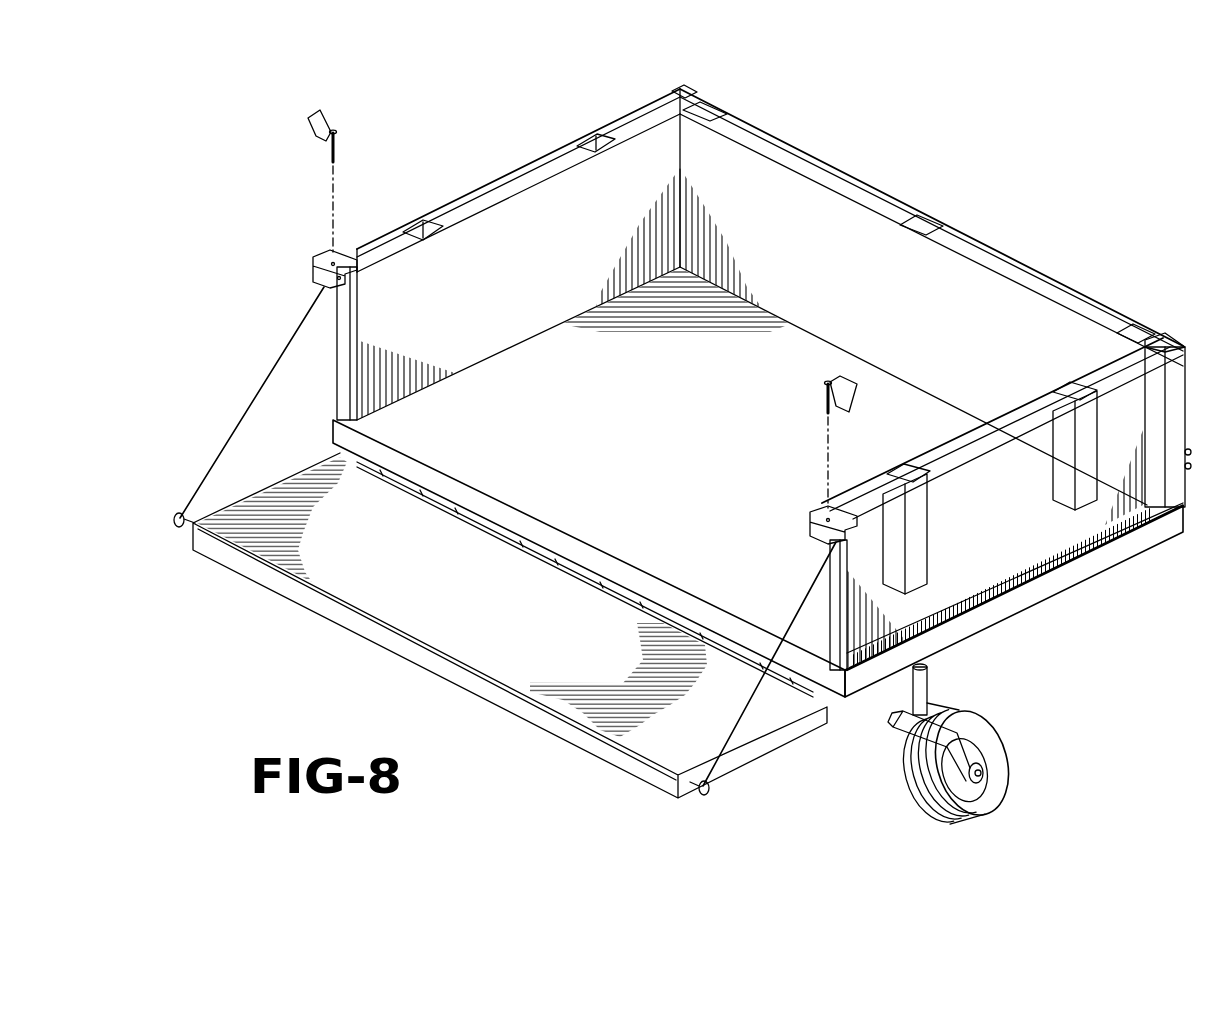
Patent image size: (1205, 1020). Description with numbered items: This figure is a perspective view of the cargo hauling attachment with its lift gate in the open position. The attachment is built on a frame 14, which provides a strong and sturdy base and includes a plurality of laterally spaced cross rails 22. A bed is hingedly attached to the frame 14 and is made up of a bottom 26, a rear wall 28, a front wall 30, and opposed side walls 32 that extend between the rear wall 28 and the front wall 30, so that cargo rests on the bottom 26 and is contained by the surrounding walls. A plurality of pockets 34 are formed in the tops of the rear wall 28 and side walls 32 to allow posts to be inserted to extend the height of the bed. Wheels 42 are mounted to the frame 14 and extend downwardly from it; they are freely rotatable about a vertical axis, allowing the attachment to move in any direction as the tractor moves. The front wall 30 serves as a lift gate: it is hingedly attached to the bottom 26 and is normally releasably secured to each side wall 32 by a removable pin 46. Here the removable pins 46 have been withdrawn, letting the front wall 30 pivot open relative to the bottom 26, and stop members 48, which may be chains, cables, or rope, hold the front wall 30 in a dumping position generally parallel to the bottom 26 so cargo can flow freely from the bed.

The frame 14 is at (758, 578).
The cross rails 22 is at (1000, 633).
The bottom 26 is at (665, 434).
The rear wall 28 is at (920, 304).
The front wall 30 is at (515, 623).
The side walls 32 is at (535, 281).
The pockets 34 is at (590, 143).
The wheels 42 is at (962, 790).
The removable pin 46 is at (330, 150).
The stop members 48 is at (228, 436).